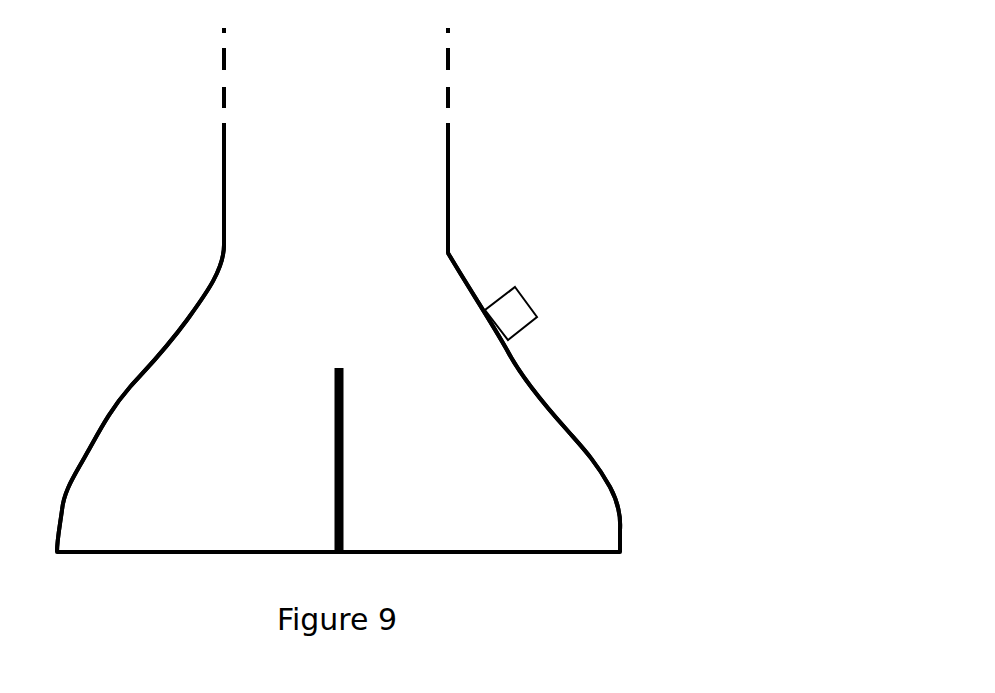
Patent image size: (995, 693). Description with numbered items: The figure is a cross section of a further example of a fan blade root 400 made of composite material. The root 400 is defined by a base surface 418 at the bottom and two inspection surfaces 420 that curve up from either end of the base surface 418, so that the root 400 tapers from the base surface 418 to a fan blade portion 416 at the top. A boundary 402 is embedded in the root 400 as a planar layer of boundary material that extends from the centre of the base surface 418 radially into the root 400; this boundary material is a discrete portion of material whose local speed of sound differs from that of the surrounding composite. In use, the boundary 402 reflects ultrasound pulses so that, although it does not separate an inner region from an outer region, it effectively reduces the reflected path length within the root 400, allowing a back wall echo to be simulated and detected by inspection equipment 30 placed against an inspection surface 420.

The fan blade root 400 is at (510, 420).
The fan blade portion 416 is at (420, 182).
The inspection surface 420 is at (130, 390).
The base surface 418 is at (548, 555).
The boundary 402 is at (337, 482).
The inspection equipment 30 is at (528, 301).